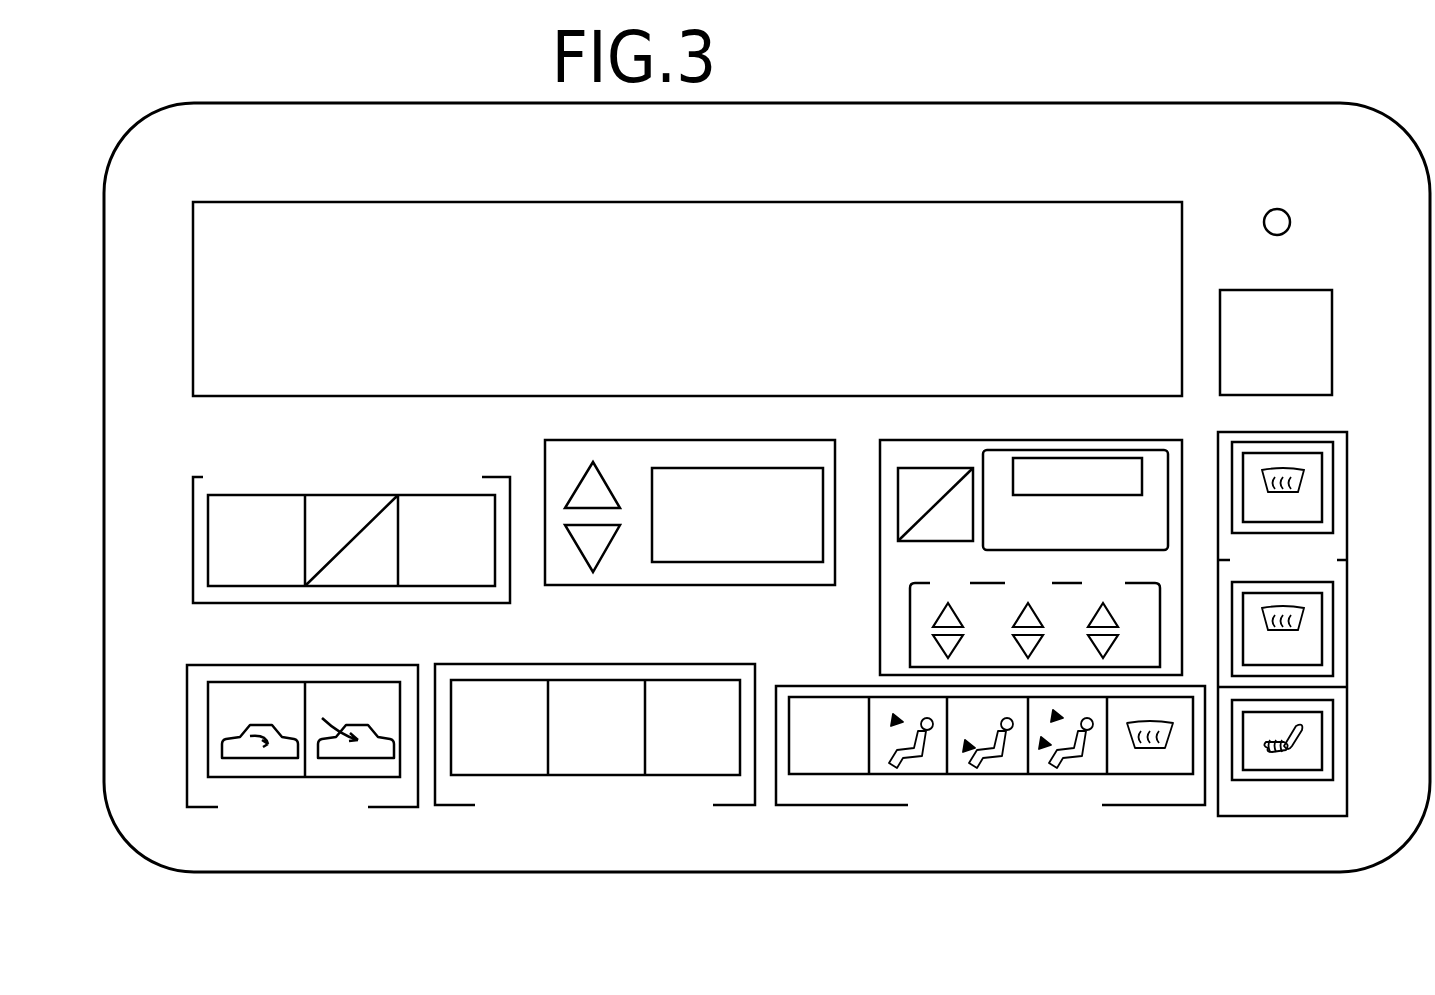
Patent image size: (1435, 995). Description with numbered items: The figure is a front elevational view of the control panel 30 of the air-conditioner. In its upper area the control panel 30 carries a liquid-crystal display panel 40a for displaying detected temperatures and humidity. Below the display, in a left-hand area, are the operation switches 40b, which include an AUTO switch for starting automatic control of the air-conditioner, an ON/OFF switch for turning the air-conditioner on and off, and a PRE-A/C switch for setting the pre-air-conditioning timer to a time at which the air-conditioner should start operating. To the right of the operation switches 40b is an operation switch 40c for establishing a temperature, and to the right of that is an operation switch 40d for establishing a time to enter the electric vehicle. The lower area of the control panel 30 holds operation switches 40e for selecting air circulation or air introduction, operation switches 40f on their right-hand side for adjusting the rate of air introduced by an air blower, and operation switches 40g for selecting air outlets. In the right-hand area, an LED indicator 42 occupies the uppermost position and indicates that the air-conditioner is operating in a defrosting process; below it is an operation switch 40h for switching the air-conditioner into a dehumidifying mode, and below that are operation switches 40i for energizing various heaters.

The control panel 30 is at (1092, 98).
The liquid-crystal display panel 40a is at (657, 231).
The operation switches 40b is at (330, 580).
The operation switch 40c is at (772, 575).
The operation switch 40d is at (1000, 458).
The operation switches 40e is at (385, 767).
The operation switches 40f is at (725, 765).
The operation switches 40g is at (1145, 763).
The operation switch 40h is at (1325, 314).
The operation switches 40i is at (1338, 573).
The LED indicator 42 is at (1290, 225).